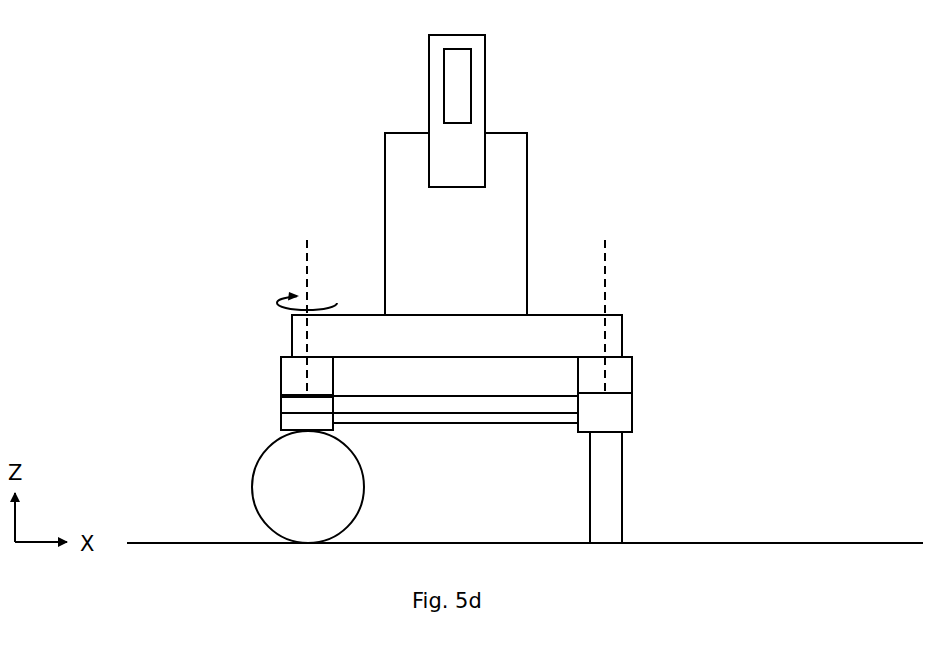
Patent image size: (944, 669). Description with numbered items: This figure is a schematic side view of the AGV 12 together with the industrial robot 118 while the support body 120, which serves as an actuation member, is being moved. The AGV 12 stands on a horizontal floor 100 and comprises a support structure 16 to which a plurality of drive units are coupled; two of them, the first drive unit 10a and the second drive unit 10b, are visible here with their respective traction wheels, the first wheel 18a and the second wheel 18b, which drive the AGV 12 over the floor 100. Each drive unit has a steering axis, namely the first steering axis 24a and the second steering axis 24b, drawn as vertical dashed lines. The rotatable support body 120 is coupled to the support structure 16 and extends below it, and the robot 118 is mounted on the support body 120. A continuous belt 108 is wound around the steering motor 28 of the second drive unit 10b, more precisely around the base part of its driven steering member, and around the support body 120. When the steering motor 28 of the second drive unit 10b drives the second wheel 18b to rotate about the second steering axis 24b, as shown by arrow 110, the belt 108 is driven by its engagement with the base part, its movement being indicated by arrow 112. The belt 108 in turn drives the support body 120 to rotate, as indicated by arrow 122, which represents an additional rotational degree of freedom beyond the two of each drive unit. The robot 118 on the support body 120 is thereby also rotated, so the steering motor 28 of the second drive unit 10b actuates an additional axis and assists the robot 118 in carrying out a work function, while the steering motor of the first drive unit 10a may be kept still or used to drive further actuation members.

The AGV 12 is at (168, 250).
The first drive unit 10a is at (595, 373).
The second drive unit 10b is at (322, 373).
The first steering axis 24a is at (605, 292).
The second steering axis 24b is at (307, 292).
The support structure 16 is at (466, 349).
The industrial robot 118 is at (477, 228).
The support body 120 is at (478, 388).
The arrow indicating rotation of the support body 122 is at (490, 287).
The arrow indicating rotation about the second steering axis 110 is at (283, 303).
The arrow indicating movement of the belt 112 is at (272, 405).
The continuous belt 108 is at (463, 408).
The steering motor 28 is at (325, 425).
The first wheel 18a is at (605, 490).
The second wheel 18b is at (331, 500).
The floor 100 is at (748, 542).